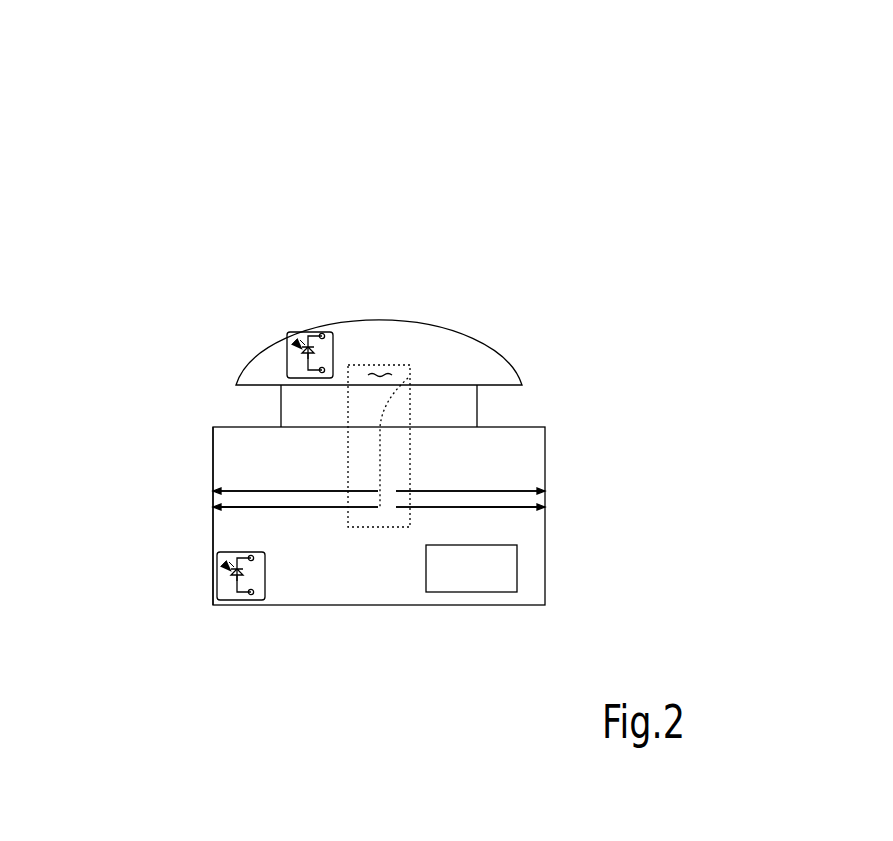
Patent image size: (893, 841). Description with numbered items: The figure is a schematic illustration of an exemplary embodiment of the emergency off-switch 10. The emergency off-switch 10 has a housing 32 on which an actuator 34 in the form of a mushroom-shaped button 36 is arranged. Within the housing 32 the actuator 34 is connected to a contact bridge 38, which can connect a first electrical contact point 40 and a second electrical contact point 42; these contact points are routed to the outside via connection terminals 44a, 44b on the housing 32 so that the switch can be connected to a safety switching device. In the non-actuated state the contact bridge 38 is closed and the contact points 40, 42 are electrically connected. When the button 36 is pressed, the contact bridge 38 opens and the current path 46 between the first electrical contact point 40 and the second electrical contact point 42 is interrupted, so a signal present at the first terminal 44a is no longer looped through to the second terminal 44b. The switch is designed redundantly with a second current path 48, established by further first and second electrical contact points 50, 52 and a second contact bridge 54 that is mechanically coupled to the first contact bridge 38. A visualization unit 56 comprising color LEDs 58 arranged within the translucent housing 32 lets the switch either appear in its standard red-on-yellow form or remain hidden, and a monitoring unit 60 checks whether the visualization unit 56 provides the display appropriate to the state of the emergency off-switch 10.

The emergency off-switch 10 is at (312, 196).
The housing 32 is at (545, 458).
The actuator 34 is at (387, 398).
The mushroom-shaped button 36 is at (390, 330).
The contact bridge 38 is at (386, 486).
The first electrical contact point 40 is at (213, 463).
The second electrical contact point 42 is at (549, 491).
The connection terminal 44a is at (193, 492).
The connection terminal 44b is at (574, 502).
The current path 46 is at (260, 491).
The second current path 48 is at (297, 508).
The further first electrical contact point 50 is at (213, 507).
The further second electrical contact point 52 is at (545, 507).
The second contact bridge 54 is at (394, 501).
The visualization unit 56 is at (293, 332).
The color LEDs 58 is at (316, 352).
The monitoring unit 60 is at (488, 565).